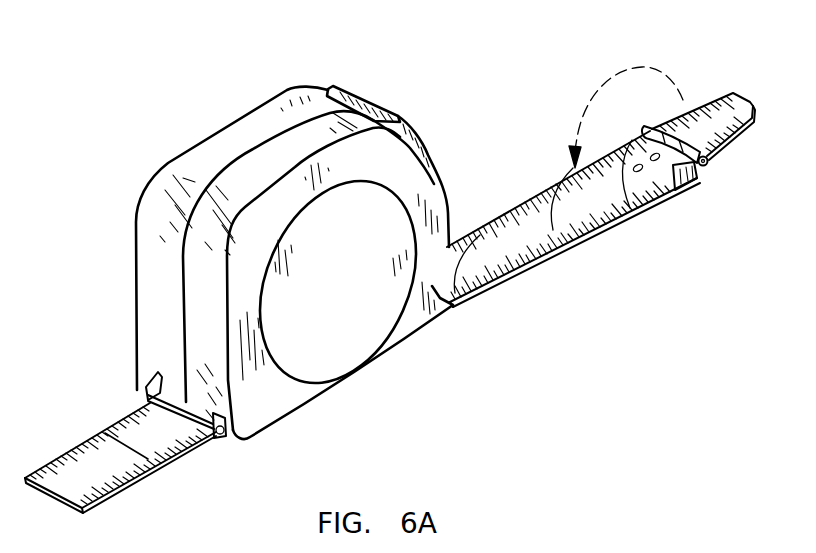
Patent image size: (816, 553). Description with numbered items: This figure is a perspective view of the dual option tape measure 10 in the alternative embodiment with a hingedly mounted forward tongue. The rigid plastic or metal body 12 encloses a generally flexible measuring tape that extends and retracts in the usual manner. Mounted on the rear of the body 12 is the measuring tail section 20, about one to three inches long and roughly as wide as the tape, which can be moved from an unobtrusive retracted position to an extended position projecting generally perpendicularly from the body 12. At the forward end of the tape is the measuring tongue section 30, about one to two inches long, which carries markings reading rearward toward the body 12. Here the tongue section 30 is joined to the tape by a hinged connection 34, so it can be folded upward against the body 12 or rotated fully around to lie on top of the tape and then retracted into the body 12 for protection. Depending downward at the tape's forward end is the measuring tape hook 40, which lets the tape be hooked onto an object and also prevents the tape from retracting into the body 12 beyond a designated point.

The dual option tape measure 10 is at (158, 161).
The body 12 is at (342, 320).
The measuring tail section 20 is at (107, 458).
The measuring tongue section 30 is at (724, 113).
The hinged connection 34 is at (707, 166).
The measuring tape hook 40 is at (679, 186).